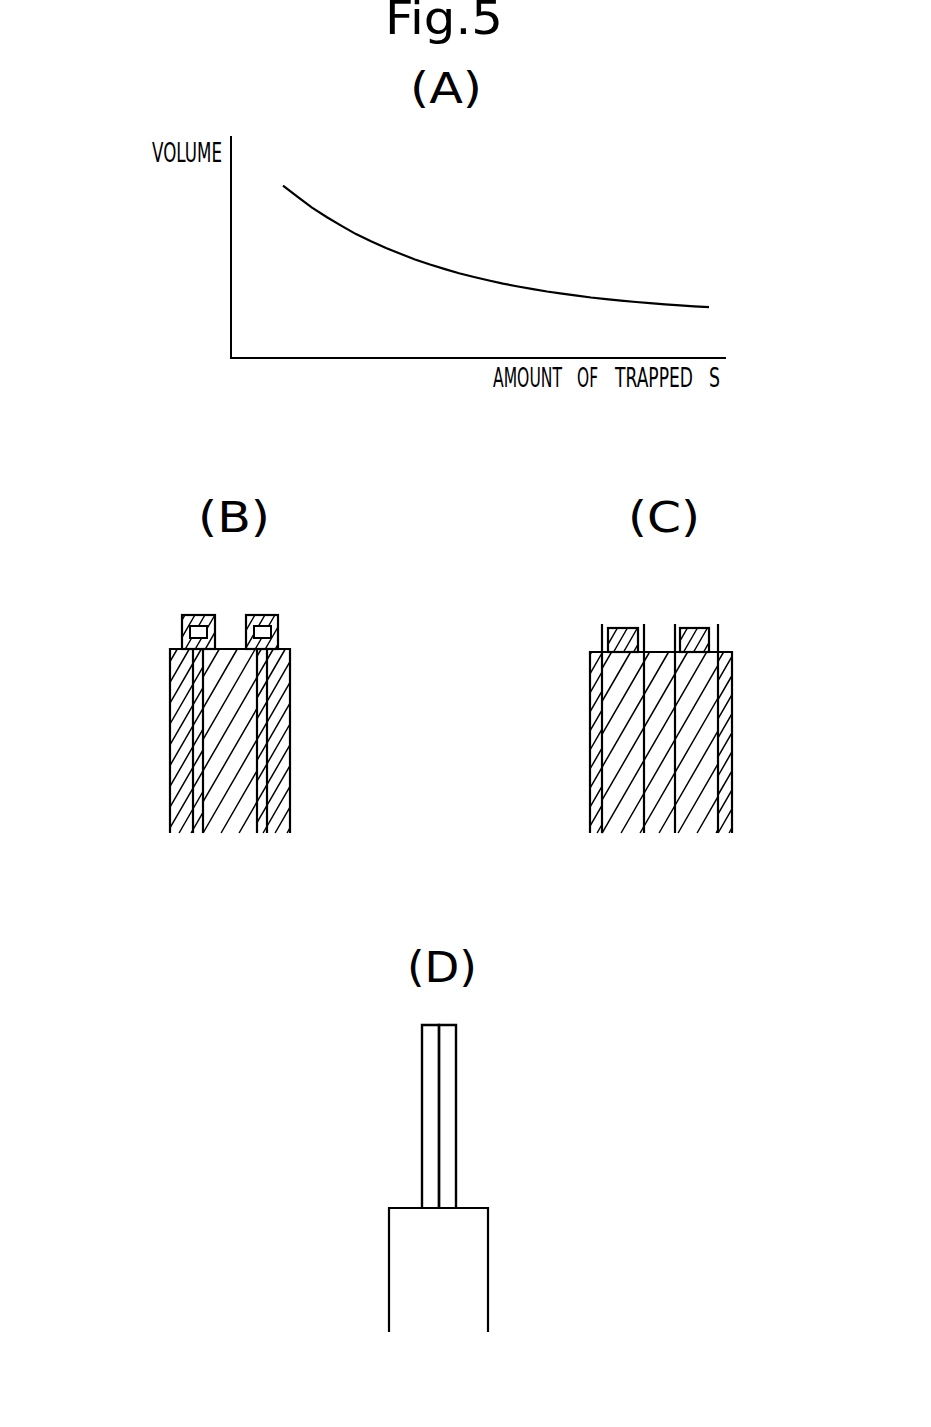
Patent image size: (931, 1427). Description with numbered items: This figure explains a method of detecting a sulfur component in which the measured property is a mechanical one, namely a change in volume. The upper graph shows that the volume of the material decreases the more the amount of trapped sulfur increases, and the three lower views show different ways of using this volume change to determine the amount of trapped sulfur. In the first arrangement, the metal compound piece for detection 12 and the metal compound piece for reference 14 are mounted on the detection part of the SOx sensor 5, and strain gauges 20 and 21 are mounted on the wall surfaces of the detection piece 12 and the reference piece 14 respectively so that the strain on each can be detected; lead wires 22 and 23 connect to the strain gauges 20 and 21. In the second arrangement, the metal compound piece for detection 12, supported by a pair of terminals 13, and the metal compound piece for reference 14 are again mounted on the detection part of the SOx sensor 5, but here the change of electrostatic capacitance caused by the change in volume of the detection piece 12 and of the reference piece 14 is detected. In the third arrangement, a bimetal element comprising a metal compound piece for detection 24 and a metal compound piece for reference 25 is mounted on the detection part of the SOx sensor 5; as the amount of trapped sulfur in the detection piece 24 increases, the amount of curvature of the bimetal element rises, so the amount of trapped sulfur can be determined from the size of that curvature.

The SOx sensor 5 is at (279, 990).
The metal compound piece for detection 12 is at (371, 604).
The pair of terminals 13 is at (645, 730).
The metal compound piece for reference 14 is at (529, 695).
The strain gauge 20 is at (196, 633).
The strain gauge 21 is at (264, 633).
The lead wire 22 is at (202, 707).
The lead wire 23 is at (258, 703).
The metal compound piece for detection 24 is at (423, 1089).
The metal compound piece for reference 25 is at (449, 1089).